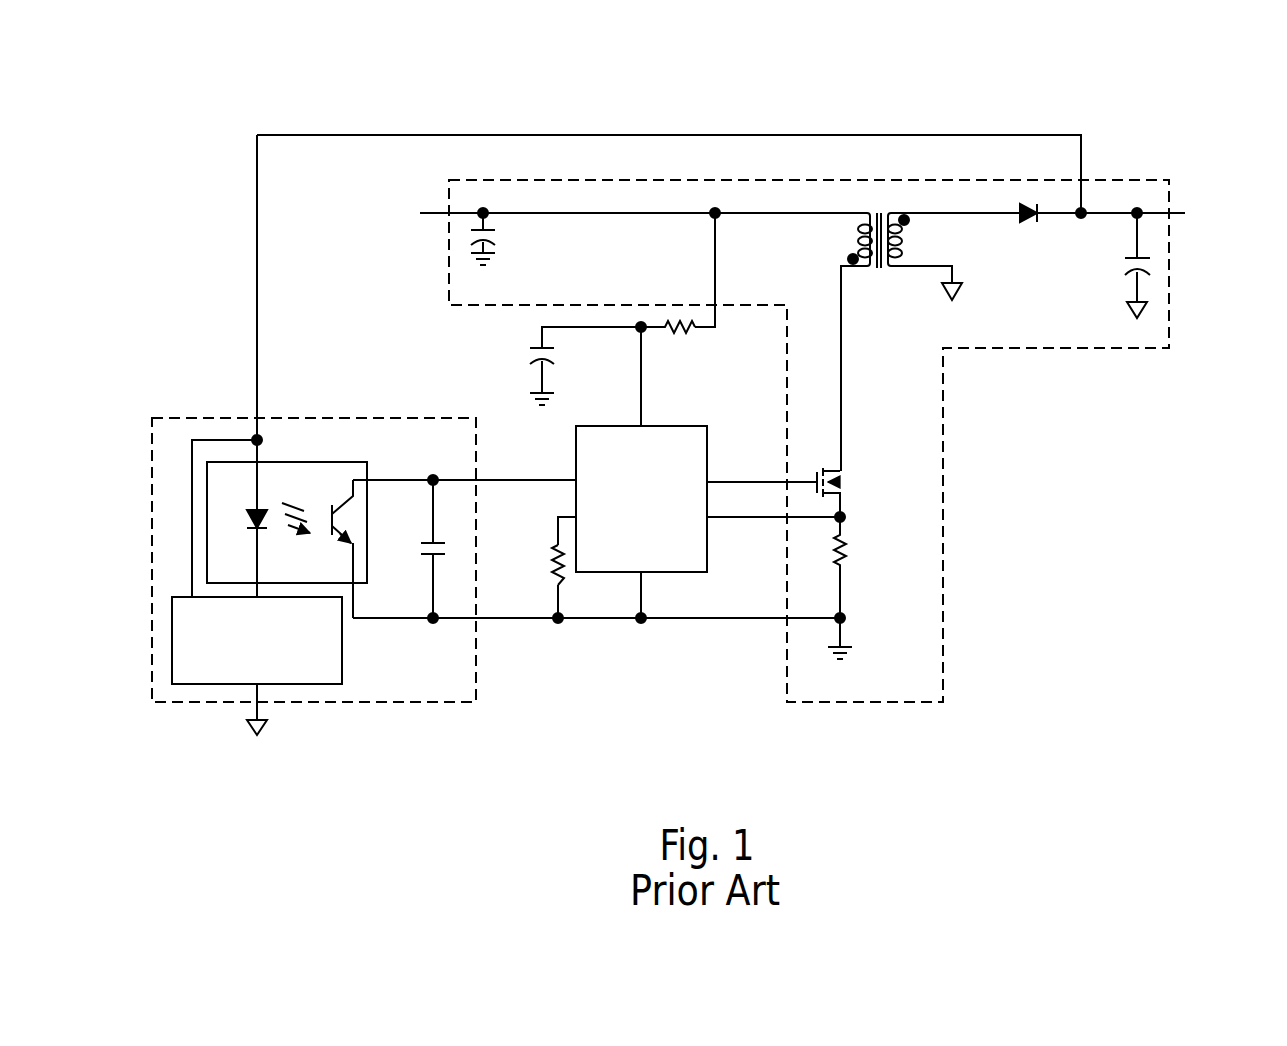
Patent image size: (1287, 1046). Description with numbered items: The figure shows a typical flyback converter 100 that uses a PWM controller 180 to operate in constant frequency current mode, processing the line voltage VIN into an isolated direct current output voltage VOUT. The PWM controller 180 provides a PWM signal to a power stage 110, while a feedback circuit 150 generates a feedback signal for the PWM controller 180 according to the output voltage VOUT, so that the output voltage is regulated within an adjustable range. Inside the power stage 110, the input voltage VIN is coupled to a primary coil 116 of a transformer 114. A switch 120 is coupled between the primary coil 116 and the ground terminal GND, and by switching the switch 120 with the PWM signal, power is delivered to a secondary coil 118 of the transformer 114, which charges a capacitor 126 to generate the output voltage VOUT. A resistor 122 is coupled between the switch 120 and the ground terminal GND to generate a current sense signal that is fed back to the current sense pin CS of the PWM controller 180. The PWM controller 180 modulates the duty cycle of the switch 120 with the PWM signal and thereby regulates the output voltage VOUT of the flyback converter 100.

The flyback converter 100 is at (252, 88).
The power stage 110 is at (1073, 351).
The transformer 114 is at (878, 272).
The primary coil 116 is at (848, 238).
The secondary coil 118 is at (908, 238).
The switch 120 is at (852, 479).
The resistor 122 is at (856, 546).
The capacitor 126 is at (1120, 268).
The feedback circuit 150 is at (396, 705).
The PWM controller 180 is at (707, 552).